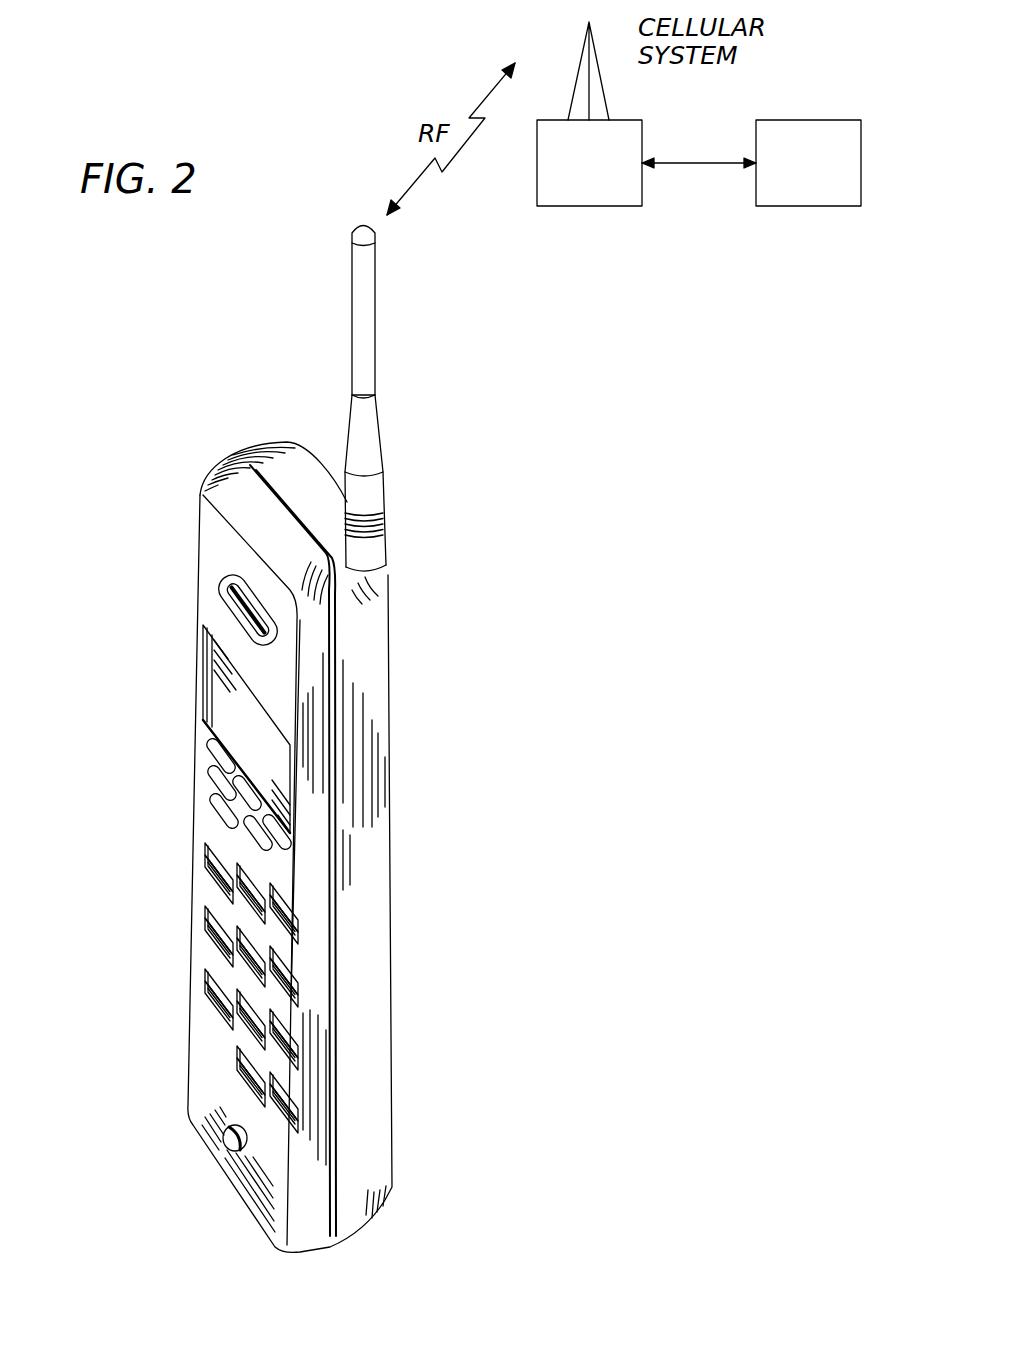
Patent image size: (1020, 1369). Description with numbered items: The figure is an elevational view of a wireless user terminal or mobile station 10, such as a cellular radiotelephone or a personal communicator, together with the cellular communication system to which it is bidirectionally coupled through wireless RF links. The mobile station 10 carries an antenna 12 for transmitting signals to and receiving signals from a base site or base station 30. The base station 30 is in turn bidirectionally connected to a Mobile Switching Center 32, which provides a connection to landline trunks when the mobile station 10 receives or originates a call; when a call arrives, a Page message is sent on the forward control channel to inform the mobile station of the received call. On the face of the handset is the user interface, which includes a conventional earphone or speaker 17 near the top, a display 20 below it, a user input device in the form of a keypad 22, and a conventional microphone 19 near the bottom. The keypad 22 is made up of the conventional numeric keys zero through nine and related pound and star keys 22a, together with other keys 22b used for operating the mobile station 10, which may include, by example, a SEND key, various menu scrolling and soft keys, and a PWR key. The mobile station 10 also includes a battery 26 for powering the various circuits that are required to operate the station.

The mobile station 10 is at (130, 482).
The antenna 12 is at (365, 345).
The speaker 17 is at (240, 591).
The microphone 19 is at (233, 1140).
The display 20 is at (225, 706).
The keypad 22 is at (295, 992).
The numeric and related keys 22a is at (208, 975).
The other keys 22b is at (223, 808).
The battery 26 is at (375, 1093).
The base station 30 is at (580, 207).
The Mobile Switching Center 32 is at (807, 120).